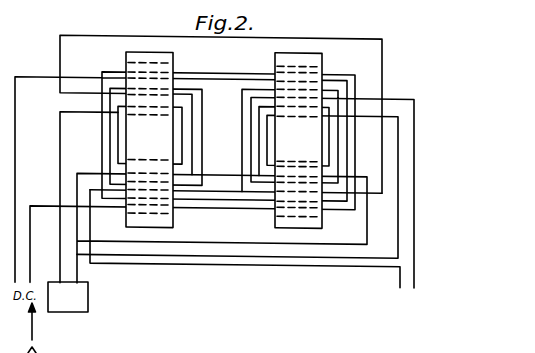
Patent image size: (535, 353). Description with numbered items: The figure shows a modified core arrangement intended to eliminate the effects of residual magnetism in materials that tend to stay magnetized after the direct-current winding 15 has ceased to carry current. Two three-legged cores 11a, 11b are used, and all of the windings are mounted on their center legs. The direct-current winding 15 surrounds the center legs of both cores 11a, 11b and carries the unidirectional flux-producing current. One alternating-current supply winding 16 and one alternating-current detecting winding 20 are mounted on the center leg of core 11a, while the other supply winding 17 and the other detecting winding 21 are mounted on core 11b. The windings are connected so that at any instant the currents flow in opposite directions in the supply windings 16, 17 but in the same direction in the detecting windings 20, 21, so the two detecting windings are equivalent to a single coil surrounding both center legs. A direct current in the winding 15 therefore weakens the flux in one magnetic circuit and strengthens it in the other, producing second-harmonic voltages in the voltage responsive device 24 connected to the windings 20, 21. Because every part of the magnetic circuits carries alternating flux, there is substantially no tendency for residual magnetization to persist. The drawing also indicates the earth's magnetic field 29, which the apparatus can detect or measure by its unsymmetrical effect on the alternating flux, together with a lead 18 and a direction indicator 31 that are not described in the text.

The three-legged core 11a is at (173, 54).
The three-legged core 11b is at (323, 60).
The direct-current winding 15 is at (229, 73).
The alternating-current supply winding 16 is at (205, 128).
The alternating-current supply winding 17 is at (342, 153).
The lead 18 is at (414, 292).
The alternating-current detecting winding 20 is at (192, 156).
The alternating-current detecting winding 21 is at (240, 174).
The device 24 is at (98, 286).
The magnetic field 29 is at (35, 327).
The field direction indicator 31 is at (39, 352).